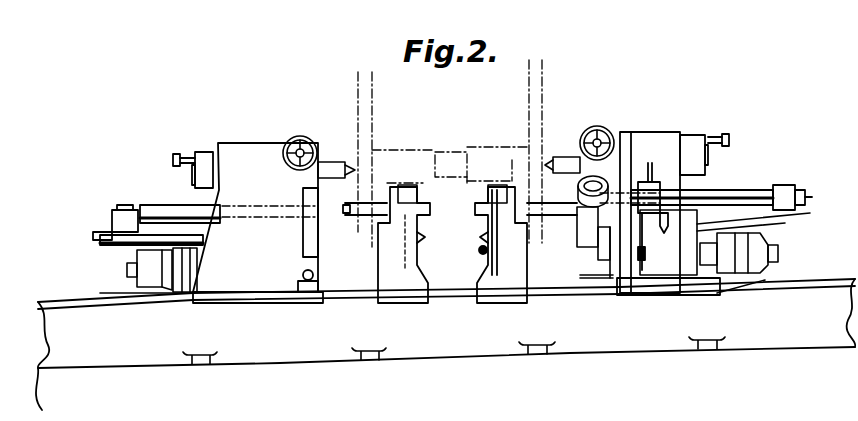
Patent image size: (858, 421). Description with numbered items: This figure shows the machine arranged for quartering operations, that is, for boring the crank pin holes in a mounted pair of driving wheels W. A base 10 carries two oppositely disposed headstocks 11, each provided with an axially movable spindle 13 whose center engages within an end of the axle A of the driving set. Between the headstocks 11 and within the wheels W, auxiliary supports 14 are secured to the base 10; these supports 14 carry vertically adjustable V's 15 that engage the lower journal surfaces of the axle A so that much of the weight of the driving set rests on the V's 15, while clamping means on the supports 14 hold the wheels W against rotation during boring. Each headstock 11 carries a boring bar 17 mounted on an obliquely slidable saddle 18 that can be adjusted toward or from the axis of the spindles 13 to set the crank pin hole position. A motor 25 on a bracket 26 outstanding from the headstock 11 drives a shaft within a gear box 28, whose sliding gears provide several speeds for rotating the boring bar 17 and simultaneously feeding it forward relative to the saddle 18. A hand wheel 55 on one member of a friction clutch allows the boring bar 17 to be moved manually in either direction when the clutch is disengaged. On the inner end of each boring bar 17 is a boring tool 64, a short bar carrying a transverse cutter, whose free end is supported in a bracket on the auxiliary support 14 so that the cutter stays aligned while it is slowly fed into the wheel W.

The base 10 is at (338, 343).
The headstock 11 is at (250, 153).
The spindle 13 is at (330, 163).
The auxiliary support 14 is at (512, 263).
The V 15 is at (398, 178).
The boring bar 17 is at (148, 213).
The saddle 18 is at (770, 224).
The motor 25 is at (147, 261).
The bracket 26 is at (152, 297).
The gear box 28 is at (672, 258).
The hand wheel 55 is at (590, 203).
The boring tool 64 is at (477, 208).
The axle A is at (443, 155).
The wheel W is at (358, 78).